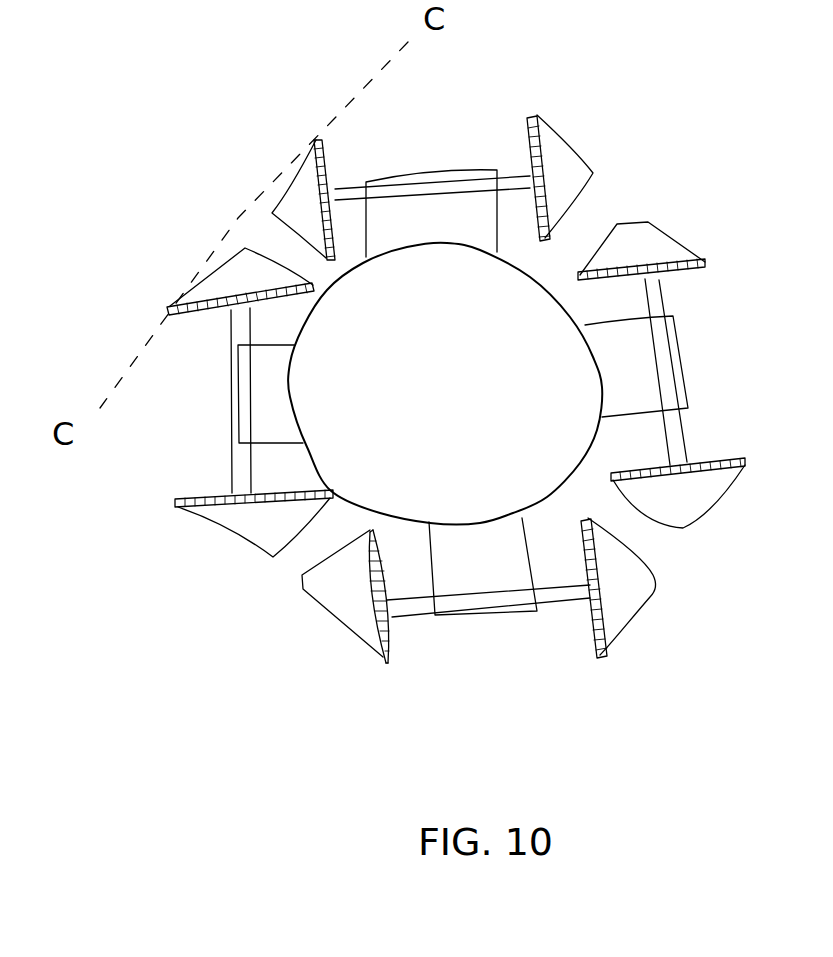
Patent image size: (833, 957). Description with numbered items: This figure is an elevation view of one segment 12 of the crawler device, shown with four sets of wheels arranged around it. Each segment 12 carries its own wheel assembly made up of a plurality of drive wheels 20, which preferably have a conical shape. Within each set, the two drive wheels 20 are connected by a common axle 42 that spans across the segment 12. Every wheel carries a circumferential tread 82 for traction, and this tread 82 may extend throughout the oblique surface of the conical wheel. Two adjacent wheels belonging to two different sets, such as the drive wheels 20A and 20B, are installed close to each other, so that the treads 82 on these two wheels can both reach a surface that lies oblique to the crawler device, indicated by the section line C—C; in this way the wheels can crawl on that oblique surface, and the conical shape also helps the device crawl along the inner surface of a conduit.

The segment 12 is at (508, 294).
The drive wheel 20 is at (680, 207).
The drive wheel 20A is at (302, 187).
The drive wheel 20B is at (192, 313).
The common axle 42 is at (658, 287).
The circumferential tread 82 is at (323, 173).